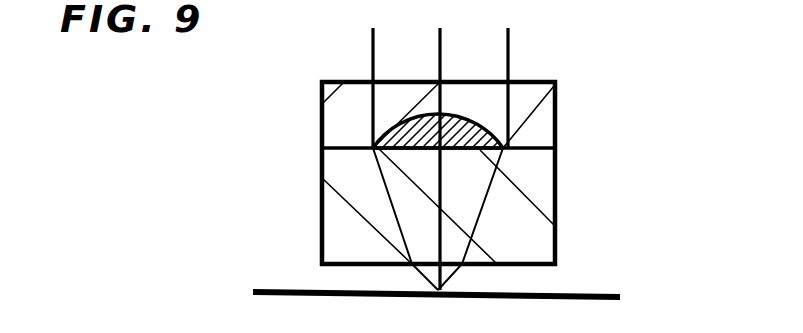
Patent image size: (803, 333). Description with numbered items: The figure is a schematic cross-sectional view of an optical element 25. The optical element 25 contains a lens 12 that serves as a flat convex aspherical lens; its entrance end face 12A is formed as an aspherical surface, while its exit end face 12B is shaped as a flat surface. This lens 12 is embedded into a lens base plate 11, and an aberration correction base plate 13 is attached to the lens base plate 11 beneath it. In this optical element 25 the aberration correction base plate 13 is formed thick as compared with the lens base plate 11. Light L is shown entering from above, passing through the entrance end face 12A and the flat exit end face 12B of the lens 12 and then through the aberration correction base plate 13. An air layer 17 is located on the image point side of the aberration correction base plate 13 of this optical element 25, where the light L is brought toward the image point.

The lens base plate 11 is at (530, 102).
The lens 12 is at (451, 145).
The entrance end face 12A is at (393, 116).
The exit end face 12B is at (398, 154).
The aberration correction base plate 13 is at (542, 183).
The air layer 17 is at (521, 280).
The optical element 25 is at (486, 159).
The light L is at (508, 55).